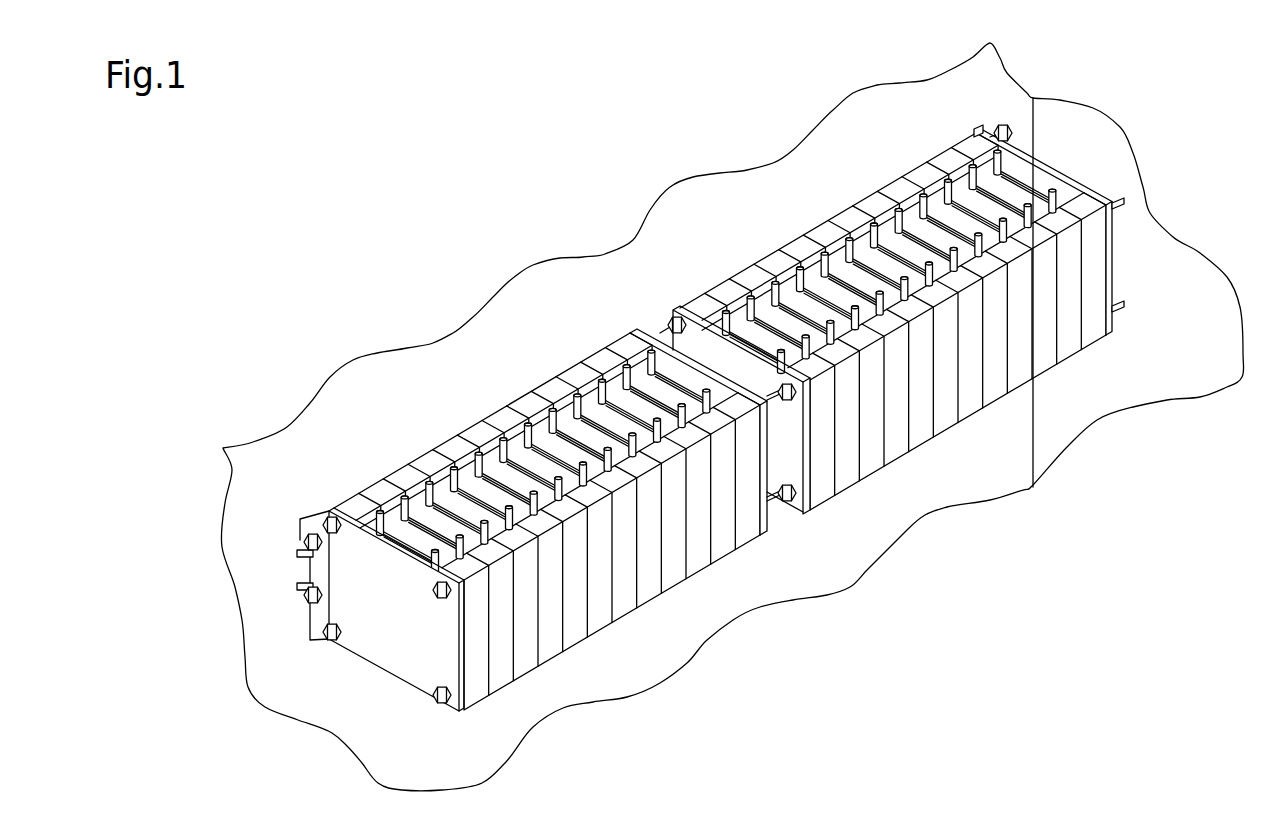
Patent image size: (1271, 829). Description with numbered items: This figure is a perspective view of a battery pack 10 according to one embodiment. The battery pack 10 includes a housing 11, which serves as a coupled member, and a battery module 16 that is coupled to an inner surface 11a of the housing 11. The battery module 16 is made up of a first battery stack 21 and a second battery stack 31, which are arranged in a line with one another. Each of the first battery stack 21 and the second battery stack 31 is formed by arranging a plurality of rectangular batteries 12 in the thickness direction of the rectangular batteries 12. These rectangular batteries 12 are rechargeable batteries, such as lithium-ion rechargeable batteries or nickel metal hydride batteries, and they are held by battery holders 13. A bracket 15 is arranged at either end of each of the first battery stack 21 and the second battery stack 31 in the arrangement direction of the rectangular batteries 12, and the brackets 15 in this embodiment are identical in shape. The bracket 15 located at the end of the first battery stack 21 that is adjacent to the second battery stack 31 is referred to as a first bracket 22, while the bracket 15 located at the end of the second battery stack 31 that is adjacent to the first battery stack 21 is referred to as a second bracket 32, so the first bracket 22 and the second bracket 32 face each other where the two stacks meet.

The battery pack 10 is at (559, 179).
The housing 11 is at (1141, 111).
The inner surface 11a is at (897, 92).
The rectangular battery 12 is at (470, 479).
The battery holder 13 is at (497, 418).
The bracket 15 is at (303, 516).
The battery module 16 is at (640, 268).
The first battery stack 21 is at (539, 347).
The first bracket 22 is at (636, 326).
The second battery stack 31 is at (937, 128).
The second bracket 32 is at (662, 314).